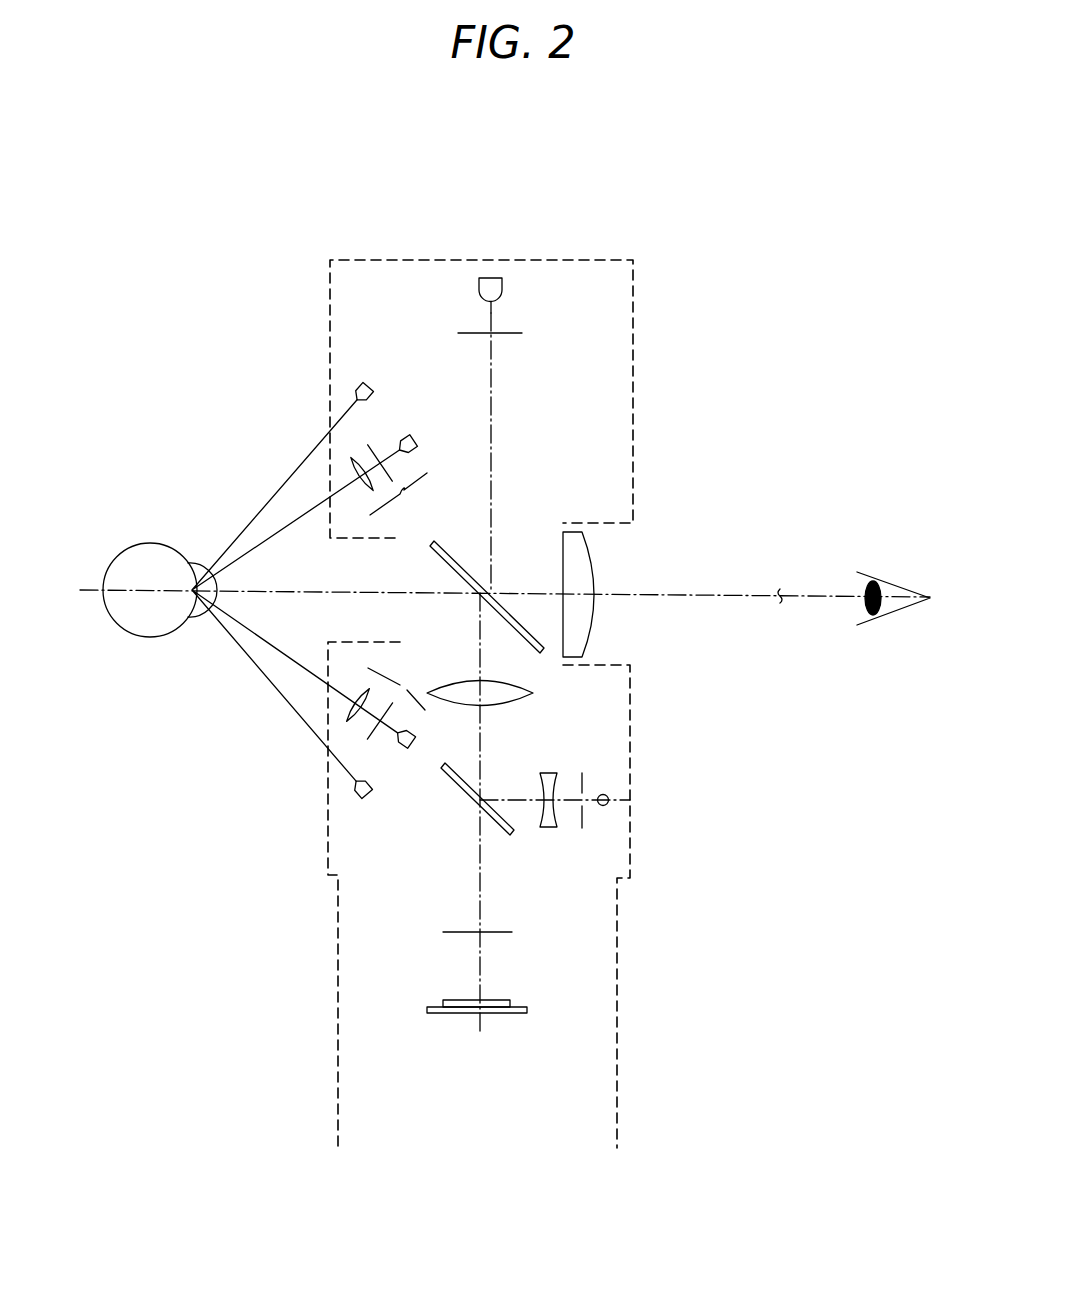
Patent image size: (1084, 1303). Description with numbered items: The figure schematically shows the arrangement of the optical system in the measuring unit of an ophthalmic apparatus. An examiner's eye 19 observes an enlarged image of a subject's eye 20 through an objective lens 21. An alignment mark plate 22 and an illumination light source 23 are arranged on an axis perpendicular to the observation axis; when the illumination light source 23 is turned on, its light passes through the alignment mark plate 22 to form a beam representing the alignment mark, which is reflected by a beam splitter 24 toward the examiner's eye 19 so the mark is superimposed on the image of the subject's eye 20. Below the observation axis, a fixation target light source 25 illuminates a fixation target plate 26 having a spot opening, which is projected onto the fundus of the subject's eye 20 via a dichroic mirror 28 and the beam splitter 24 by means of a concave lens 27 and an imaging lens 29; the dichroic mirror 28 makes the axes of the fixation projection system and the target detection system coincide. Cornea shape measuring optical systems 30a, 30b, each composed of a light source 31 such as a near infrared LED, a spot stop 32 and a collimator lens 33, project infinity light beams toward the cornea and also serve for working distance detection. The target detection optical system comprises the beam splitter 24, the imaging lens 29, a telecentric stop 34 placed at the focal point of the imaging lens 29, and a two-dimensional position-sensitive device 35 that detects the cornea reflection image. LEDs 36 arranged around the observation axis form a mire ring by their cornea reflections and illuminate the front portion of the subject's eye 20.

The examiner's eye 19 is at (897, 580).
The subject's eye 20 is at (152, 632).
The objective lens 21 is at (586, 555).
The alignment mark plate 22 is at (534, 331).
The illumination light source 23 is at (496, 280).
The beam splitter 24 is at (472, 562).
The fixation target light source 25 is at (612, 800).
The fixation target plate 26 is at (590, 822).
The concave lens 27 is at (550, 773).
The dichroic mirror 28 is at (512, 836).
The imaging lens 29 is at (535, 691).
The cornea shape measuring optical system 30a is at (414, 502).
The cornea shape measuring optical system 30b is at (400, 685).
The light source 31 is at (416, 441).
The spot stop 32 is at (370, 444).
The collimator lens 33 is at (350, 460).
The telecentric stop 34 is at (443, 935).
The two-dimensional position-sensitive device 35 is at (440, 1013).
The LEDs 36 is at (355, 391).